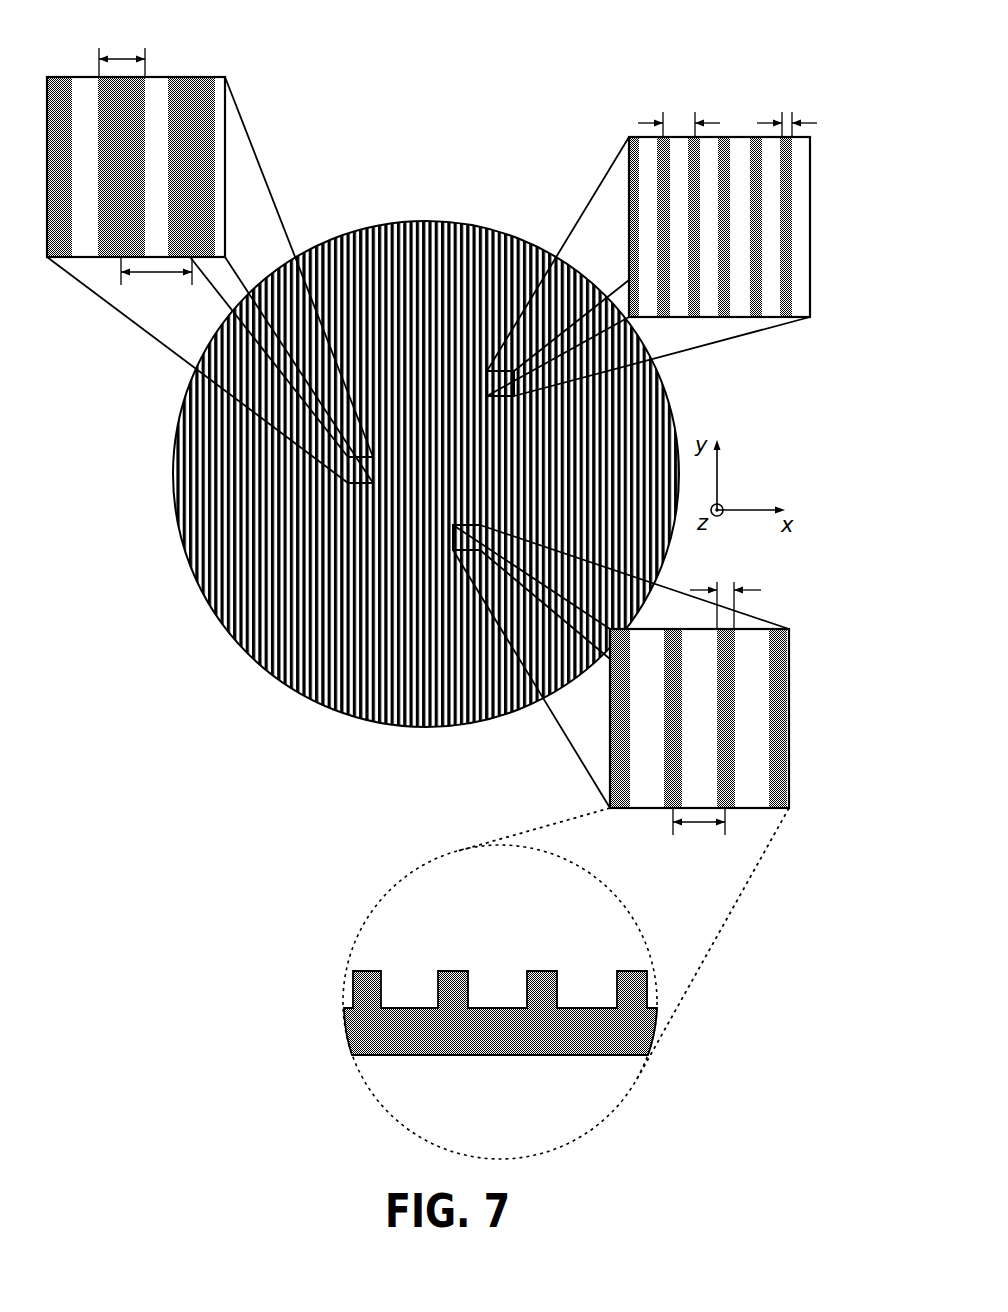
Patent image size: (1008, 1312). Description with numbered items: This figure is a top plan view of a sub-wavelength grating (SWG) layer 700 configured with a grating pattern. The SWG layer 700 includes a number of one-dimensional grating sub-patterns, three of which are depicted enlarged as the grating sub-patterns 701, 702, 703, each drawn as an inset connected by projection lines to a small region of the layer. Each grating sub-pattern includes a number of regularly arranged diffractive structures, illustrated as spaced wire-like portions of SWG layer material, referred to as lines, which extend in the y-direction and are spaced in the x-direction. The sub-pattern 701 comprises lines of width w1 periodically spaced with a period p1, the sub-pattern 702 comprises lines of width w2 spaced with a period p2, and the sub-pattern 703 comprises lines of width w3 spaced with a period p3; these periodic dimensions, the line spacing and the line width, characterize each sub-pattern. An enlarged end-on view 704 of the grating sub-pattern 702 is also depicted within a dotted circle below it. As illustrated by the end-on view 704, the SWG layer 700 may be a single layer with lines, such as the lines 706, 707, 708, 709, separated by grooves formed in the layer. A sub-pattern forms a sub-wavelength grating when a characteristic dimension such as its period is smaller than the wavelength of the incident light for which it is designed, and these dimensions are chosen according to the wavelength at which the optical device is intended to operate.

The SWG layer 700 is at (423, 221).
The grating sub-pattern 701 is at (200, 77).
The grating sub-pattern 702 is at (789, 695).
The grating sub-pattern 703 is at (810, 186).
The end-on view 704 is at (388, 893).
The line 706 is at (363, 968).
The line 707 is at (453, 968).
The line 708 is at (545, 968).
The line 709 is at (633, 982).